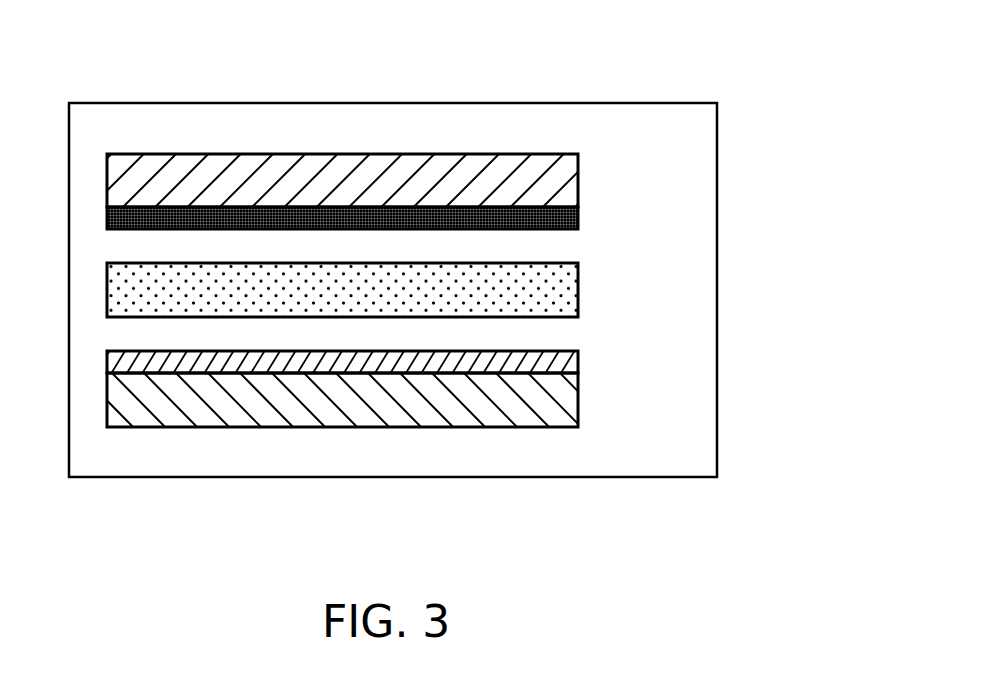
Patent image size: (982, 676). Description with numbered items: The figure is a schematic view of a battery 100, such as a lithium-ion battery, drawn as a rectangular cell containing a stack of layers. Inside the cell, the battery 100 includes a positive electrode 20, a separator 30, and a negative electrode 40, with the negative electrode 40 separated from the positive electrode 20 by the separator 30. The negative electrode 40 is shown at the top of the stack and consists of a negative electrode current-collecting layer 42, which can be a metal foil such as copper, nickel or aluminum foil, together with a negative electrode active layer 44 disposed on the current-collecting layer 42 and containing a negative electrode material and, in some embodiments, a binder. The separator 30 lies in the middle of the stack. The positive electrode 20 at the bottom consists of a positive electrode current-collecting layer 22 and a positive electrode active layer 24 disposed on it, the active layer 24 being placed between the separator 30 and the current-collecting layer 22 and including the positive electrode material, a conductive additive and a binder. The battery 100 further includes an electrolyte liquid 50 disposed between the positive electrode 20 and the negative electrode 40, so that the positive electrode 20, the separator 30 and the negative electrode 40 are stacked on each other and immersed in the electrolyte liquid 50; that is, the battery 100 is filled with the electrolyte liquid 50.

The battery 100 is at (727, 68).
The electrolyte liquid 50 is at (376, 290).
The negative electrode 40 is at (380, 193).
The negative electrode current-collecting layer 42 is at (578, 180).
The negative electrode active layer 44 is at (578, 217).
The separator 30 is at (578, 290).
The positive electrode 20 is at (375, 383).
The positive electrode active layer 24 is at (578, 360).
The positive electrode current-collecting layer 22 is at (578, 398).